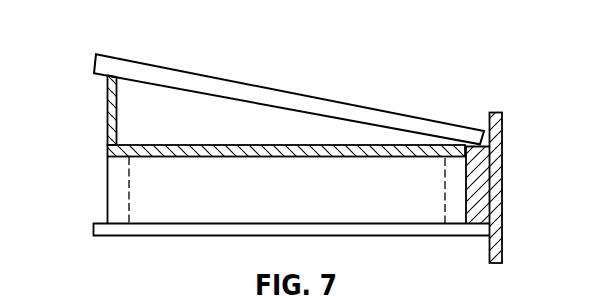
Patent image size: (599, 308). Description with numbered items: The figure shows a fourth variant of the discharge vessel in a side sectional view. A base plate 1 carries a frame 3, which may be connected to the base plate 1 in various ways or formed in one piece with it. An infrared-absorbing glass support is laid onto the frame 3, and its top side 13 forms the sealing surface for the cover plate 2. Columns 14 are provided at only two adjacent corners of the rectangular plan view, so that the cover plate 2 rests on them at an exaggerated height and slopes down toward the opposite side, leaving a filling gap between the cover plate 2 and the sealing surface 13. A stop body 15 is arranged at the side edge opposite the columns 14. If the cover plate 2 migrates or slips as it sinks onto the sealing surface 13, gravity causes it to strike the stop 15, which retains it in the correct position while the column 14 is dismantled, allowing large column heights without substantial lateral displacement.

The base plate 1 is at (105, 229).
The cover plate 2 is at (215, 78).
The frame 3 is at (117, 187).
The top side of the support 13 is at (362, 150).
The columns 14 is at (107, 94).
The stop body 15 is at (490, 187).